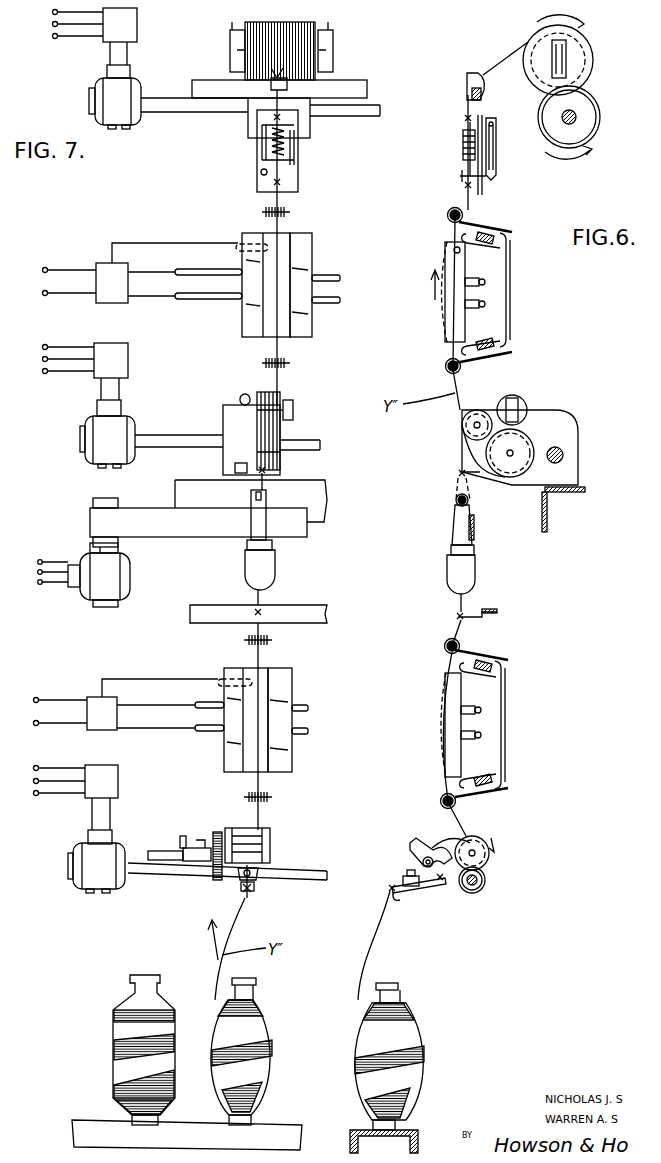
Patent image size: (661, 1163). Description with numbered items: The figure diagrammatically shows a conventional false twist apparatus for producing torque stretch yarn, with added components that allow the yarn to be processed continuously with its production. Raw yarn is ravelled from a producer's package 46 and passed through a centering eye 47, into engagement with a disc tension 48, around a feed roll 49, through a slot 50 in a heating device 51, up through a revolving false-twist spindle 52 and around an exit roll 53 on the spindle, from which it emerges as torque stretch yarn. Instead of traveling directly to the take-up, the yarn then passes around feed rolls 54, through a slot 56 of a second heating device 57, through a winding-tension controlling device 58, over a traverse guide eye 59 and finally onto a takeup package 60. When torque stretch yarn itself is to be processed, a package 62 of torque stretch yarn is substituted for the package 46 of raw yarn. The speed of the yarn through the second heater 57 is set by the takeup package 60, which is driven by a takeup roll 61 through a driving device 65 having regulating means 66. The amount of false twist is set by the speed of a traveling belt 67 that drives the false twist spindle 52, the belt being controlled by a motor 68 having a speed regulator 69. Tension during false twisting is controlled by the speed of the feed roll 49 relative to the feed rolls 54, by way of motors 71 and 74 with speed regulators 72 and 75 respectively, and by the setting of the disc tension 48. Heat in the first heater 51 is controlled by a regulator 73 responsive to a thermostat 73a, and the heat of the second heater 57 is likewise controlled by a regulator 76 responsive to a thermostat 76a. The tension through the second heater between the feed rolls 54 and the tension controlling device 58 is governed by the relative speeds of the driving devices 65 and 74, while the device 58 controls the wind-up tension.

In FIG. 7, the producer's package 46 is at (262, 1018).
In FIG. 6, the producer's package 46 is at (408, 1012).
In FIG. 7, the centering eye 47 is at (254, 884).
In FIG. 6, the centering eye 47 is at (390, 890).
In FIG. 7, the disc tension 48 is at (238, 880).
In FIG. 6, the disc tension 48 is at (408, 879).
In FIG. 7, the feed roll 49 is at (262, 830).
In FIG. 6, the feed roll 49 is at (490, 862).
In FIG. 7, the slot 50 is at (270, 684).
In FIG. 6, the slot 50 is at (445, 686).
In FIG. 7, the heating device 51 is at (285, 758).
In FIG. 6, the heating device 51 is at (449, 755).
In FIG. 7, the false-twist spindle 52 is at (268, 568).
In FIG. 6, the false-twist spindle 52 is at (467, 573).
In FIG. 7, the exit roll 53 is at (268, 500).
In FIG. 6, the exit roll 53 is at (456, 500).
In FIG. 7, the feed rolls 54 is at (230, 427).
In FIG. 6, the feed rolls 54 is at (572, 432).
In FIG. 7, the slot 56 is at (265, 306).
In FIG. 7, the second heating device 57 is at (305, 323).
In FIG. 6, the second heating device 57 is at (448, 331).
In FIG. 7, the winding-tension controlling device 58 is at (257, 145).
In FIG. 6, the winding-tension controlling device 58 is at (485, 193).
In FIG. 7, the traverse guide eye 59 is at (286, 76).
In FIG. 6, the traverse guide eye 59 is at (466, 75).
In FIG. 7, the takeup package 60 is at (318, 32).
In FIG. 6, the takeup package 60 is at (593, 62).
In FIG. 7, the takeup roll 61 is at (305, 128).
In FIG. 6, the takeup roll 61 is at (591, 127).
In FIG. 7, the package of torque stretch yarn 62 is at (120, 1020).
In FIG. 7, the driving device 65 is at (100, 90).
In FIG. 7, the regulating means 66 is at (137, 24).
In FIG. 7, the traveling belt 67 is at (205, 525).
In FIG. 6, the traveling belt 67 is at (473, 537).
In FIG. 7, the motor 68 is at (120, 580).
In FIG. 7, the speed regulator 69 is at (75, 585).
In FIG. 7, the motor 71 is at (95, 870).
In FIG. 7, the speed regulator 72 is at (112, 781).
In FIG. 7, the regulator 73 is at (95, 697).
In FIG. 7, the thermostat 73a is at (218, 682).
In FIG. 7, the motor 74 is at (100, 450).
In FIG. 7, the speed regulating device 75 is at (115, 362).
In FIG. 7, the regulator 76 is at (95, 262).
In FIG. 7, the thermostat 76a is at (238, 247).
In FIG. 6, the thermostat 76a is at (452, 250).